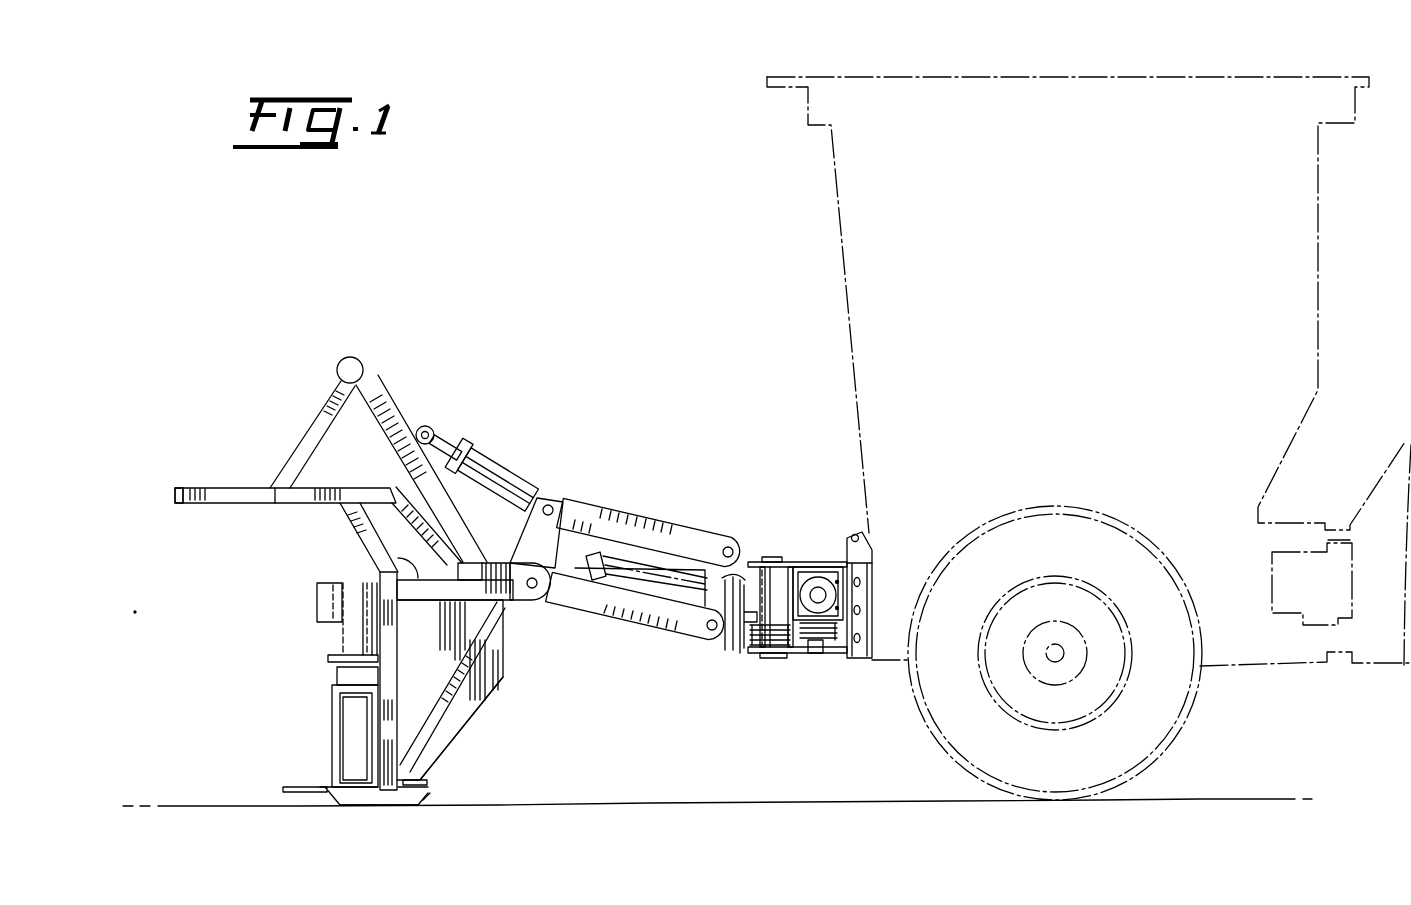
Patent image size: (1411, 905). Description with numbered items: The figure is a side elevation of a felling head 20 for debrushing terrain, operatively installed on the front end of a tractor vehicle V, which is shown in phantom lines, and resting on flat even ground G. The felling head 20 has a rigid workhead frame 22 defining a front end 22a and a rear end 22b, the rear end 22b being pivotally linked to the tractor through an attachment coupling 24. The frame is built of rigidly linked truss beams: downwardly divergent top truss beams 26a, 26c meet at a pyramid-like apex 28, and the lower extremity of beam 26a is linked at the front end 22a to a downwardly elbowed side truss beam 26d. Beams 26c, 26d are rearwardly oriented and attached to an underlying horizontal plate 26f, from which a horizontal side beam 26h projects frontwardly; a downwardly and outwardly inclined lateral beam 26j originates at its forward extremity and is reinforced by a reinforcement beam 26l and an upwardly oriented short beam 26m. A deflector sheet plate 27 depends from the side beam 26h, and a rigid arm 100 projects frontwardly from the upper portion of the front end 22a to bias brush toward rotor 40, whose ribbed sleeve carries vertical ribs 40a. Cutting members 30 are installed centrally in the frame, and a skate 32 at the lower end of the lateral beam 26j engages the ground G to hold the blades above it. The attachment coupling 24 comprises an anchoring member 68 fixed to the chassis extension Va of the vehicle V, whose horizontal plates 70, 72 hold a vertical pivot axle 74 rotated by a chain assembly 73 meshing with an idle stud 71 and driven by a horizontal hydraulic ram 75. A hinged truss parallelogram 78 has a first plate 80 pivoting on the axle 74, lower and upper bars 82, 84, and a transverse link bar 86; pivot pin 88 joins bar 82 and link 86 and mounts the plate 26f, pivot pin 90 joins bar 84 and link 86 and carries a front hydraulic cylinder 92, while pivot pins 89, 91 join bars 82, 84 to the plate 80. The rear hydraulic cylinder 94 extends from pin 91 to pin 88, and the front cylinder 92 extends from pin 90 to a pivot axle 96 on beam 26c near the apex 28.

The felling head 20 is at (512, 392).
The workhead frame 22 is at (327, 539).
The front end 22a is at (265, 478).
The rear end 22b is at (515, 640).
The attachment coupling 24 is at (665, 575).
The top truss beam 26a is at (318, 432).
The top truss beam 26c is at (390, 392).
The elbowed side truss beam 26d is at (385, 489).
The horizontal plate 26f is at (576, 535).
The horizontal side beam 26h is at (375, 553).
The lateral beam 26j is at (388, 676).
The reinforcement beam 26l is at (440, 690).
The short beam 26m is at (365, 537).
The deflector sheet plate 27 is at (437, 723).
The apex 28 is at (352, 358).
The cutting members 30 is at (312, 728).
The skate 32 is at (357, 800).
The rotor 40 is at (357, 768).
The vertical rib 40a is at (340, 717).
The anchoring member 68 is at (823, 611).
The horizontal plate 70 is at (793, 567).
The idle vertical stud 71 is at (806, 653).
The horizontal plate 72 is at (778, 655).
The chain assembly 73 is at (826, 655).
The vertical pivot axle 74 is at (770, 556).
The hydraulic ram 75 is at (818, 594).
The hinged truss parallelogram 78 is at (635, 638).
The first plate 80 is at (739, 614).
The lower bar 82 is at (606, 598).
The upper bar 84 is at (671, 520).
The transverse link bar 86 is at (562, 523).
The pivot pin 88 is at (534, 592).
The pivot pin 89 is at (711, 627).
The pivot pin 90 is at (550, 510).
The pivot pin 91 is at (729, 548).
The front hydraulic cylinder 92 is at (495, 441).
The rear hydraulic cylinder 94 is at (622, 560).
The pivot axle 96 is at (433, 430).
The rigid arm 100 is at (205, 488).
The tractor vehicle V is at (837, 232).
The chassis extension Va is at (862, 657).
The ground G is at (702, 801).